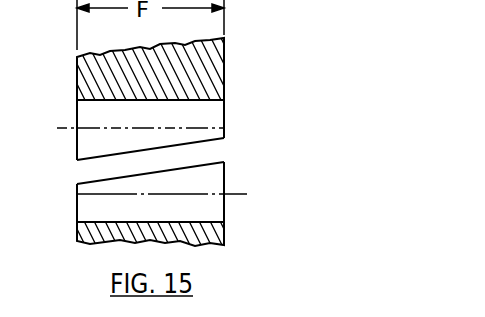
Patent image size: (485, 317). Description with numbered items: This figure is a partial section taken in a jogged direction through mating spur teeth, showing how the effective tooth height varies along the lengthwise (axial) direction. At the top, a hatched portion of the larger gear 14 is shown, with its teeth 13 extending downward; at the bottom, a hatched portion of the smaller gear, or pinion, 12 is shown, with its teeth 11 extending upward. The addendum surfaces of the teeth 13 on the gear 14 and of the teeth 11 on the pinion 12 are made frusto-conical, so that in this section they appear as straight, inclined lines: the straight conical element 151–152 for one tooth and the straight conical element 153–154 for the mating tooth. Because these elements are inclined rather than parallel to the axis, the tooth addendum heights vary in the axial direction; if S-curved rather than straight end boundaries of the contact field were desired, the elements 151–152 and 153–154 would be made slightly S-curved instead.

The teeth 11 is at (225, 201).
The smaller gear 12 is at (225, 235).
The teeth 13 is at (77, 137).
The larger gear 14 is at (225, 58).
The straight conical element 151 is at (167, 139).
The straight conical element 152 is at (58, 160).
The straight conical element 153 is at (171, 167).
The straight conical element 154 is at (58, 193).